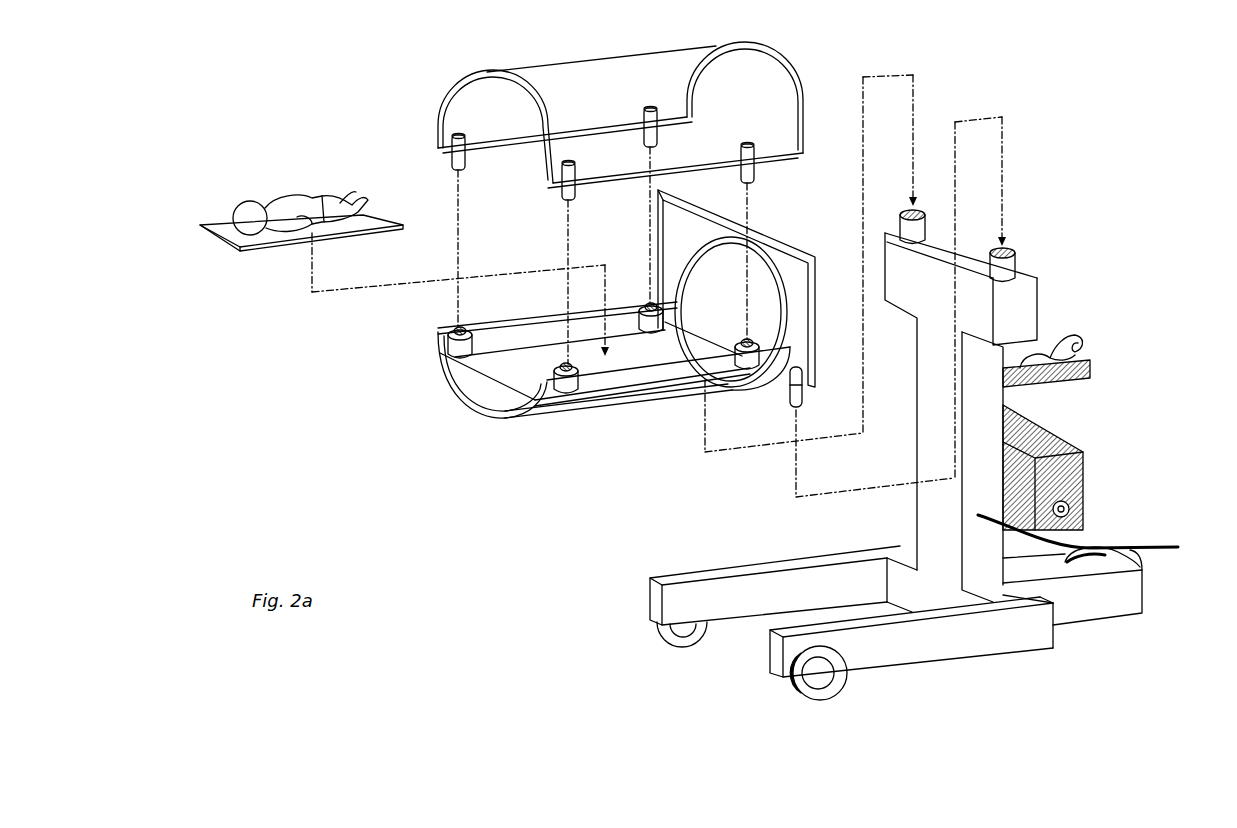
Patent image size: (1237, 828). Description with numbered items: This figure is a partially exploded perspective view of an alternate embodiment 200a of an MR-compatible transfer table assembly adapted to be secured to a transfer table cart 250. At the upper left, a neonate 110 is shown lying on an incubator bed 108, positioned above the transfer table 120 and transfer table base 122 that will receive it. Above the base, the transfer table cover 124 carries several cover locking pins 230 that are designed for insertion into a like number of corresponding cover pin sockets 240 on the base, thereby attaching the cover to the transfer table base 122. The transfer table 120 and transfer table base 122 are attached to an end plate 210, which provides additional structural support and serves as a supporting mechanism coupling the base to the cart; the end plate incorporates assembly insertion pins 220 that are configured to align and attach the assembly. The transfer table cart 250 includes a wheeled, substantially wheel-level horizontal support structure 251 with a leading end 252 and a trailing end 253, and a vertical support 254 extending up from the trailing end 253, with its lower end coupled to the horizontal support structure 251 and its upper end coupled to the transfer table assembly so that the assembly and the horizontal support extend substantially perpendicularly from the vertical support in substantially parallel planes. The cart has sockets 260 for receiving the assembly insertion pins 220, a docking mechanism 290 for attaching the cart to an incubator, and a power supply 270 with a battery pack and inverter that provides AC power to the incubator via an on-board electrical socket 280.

The neonate 110 is at (243, 203).
The incubator bed 108 is at (365, 222).
The transfer table cover 124 is at (788, 65).
The cover locking pins 230 is at (450, 152).
The end plate 210 is at (758, 227).
The assembly insertion pins 220 is at (795, 408).
The transfer table 120 is at (475, 405).
The transfer table base 122 is at (585, 405).
The cover pin sockets 240 is at (445, 352).
The sockets 260 is at (1012, 255).
The docking mechanism 290 is at (1075, 333).
The power supply 270 is at (1058, 432).
The on-board electrical socket 280 is at (1066, 502).
The vertical support 254 is at (1101, 541).
The horizontal support structure 251 is at (735, 588).
The leading end 252 is at (778, 647).
The transfer table cart 250 is at (1053, 648).
The trailing end 253 is at (1005, 585).
The transfer table assembly 200a is at (672, 721).